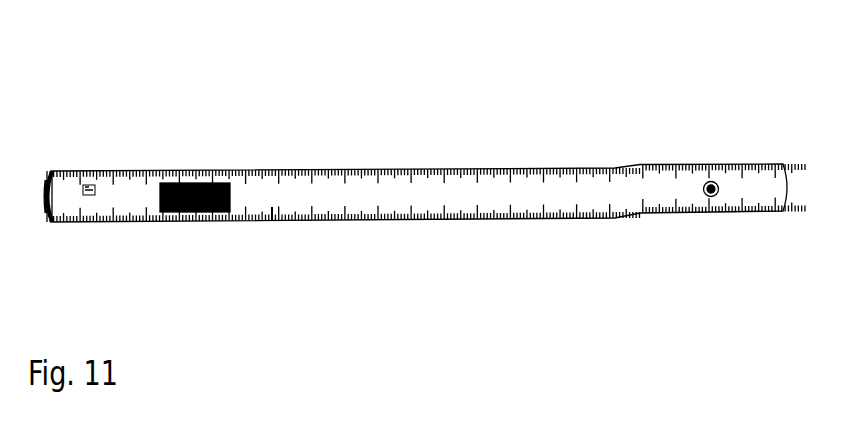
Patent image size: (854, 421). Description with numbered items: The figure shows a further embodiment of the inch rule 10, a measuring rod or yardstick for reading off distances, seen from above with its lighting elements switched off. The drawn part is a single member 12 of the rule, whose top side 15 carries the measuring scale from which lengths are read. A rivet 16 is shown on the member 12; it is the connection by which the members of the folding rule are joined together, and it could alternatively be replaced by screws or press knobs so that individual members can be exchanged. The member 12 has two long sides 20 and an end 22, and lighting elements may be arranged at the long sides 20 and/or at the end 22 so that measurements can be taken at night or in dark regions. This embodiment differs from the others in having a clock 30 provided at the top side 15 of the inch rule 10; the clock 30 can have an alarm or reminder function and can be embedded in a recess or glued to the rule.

The inch rule 10 is at (110, 53).
The member 12 is at (558, 208).
The top side 15 is at (279, 214).
The rivet 16 is at (708, 182).
The long sides 20 is at (404, 159).
The end 22 is at (47, 202).
The clock 30 is at (222, 181).